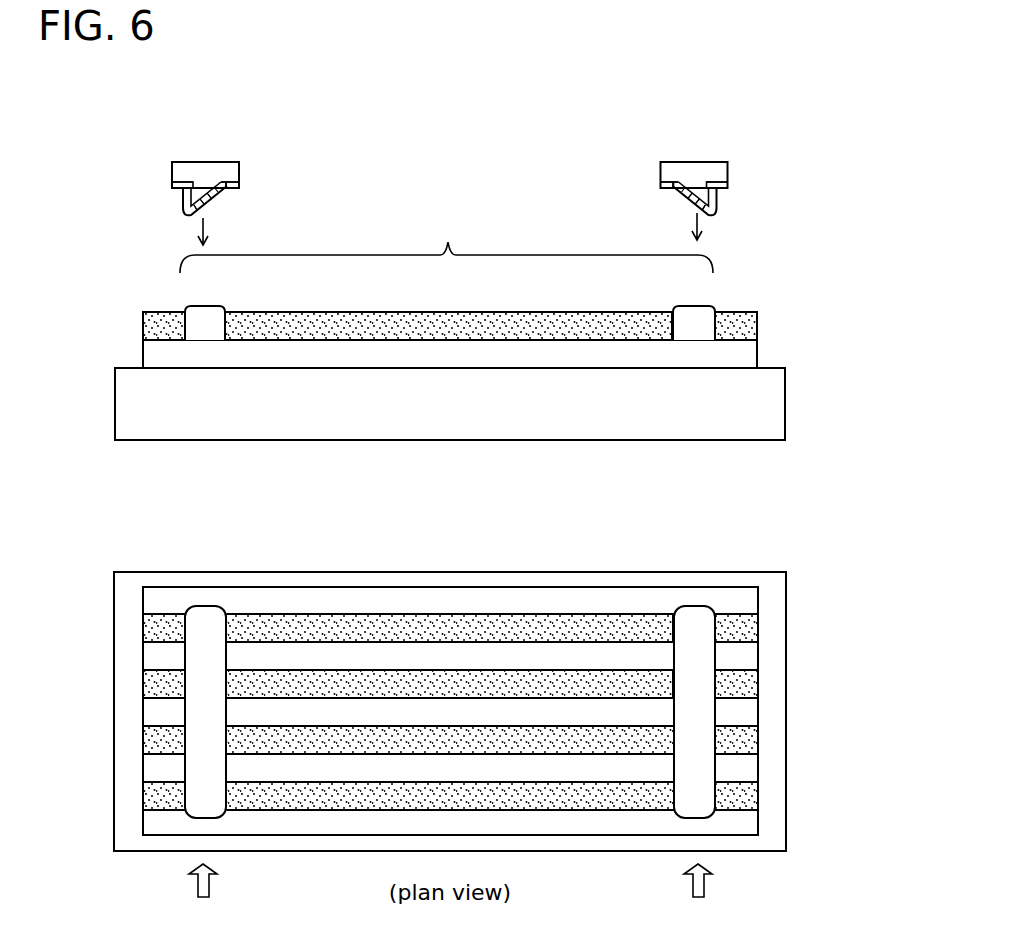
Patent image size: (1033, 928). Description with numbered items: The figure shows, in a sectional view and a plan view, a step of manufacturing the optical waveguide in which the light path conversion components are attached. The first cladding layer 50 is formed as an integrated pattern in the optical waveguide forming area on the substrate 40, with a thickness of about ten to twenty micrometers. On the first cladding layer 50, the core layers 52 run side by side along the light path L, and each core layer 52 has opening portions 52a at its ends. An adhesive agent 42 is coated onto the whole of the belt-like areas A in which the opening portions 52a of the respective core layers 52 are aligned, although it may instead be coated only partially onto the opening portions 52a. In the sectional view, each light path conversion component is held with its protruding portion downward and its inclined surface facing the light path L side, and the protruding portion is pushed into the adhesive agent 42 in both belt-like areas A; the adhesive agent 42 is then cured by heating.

The light path L is at (446, 243).
The substrate 40 is at (770, 405).
The first cladding layer 50 is at (753, 350).
The core layer 52 is at (503, 315).
The opening portion 52a is at (672, 330).
The adhesive agent 42 is at (692, 312).
The belt-like area A is at (450, 894).